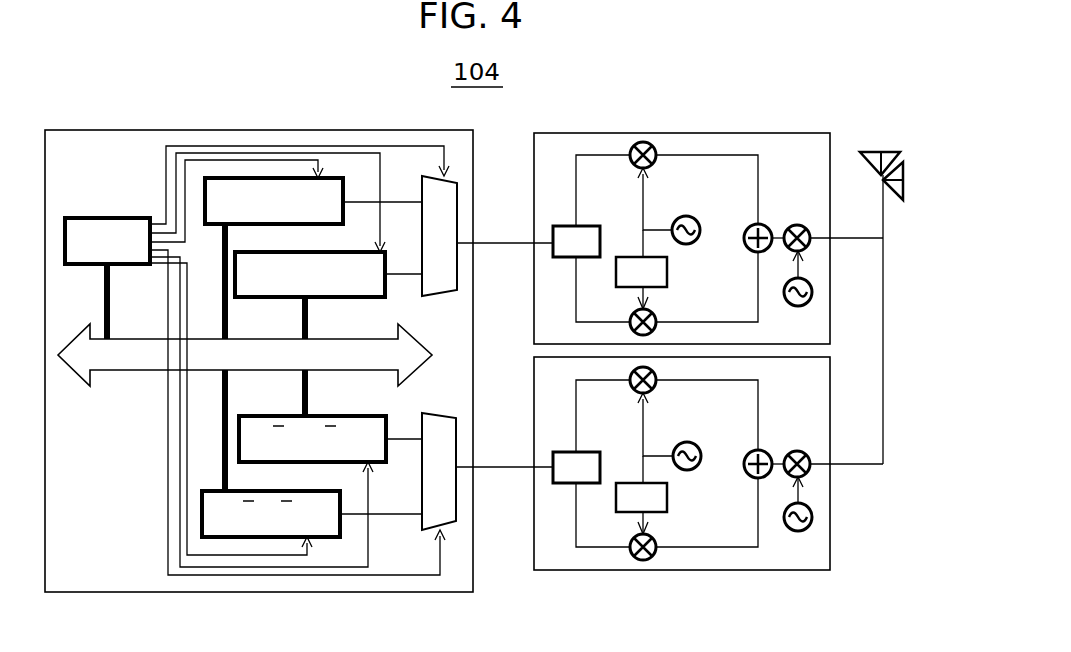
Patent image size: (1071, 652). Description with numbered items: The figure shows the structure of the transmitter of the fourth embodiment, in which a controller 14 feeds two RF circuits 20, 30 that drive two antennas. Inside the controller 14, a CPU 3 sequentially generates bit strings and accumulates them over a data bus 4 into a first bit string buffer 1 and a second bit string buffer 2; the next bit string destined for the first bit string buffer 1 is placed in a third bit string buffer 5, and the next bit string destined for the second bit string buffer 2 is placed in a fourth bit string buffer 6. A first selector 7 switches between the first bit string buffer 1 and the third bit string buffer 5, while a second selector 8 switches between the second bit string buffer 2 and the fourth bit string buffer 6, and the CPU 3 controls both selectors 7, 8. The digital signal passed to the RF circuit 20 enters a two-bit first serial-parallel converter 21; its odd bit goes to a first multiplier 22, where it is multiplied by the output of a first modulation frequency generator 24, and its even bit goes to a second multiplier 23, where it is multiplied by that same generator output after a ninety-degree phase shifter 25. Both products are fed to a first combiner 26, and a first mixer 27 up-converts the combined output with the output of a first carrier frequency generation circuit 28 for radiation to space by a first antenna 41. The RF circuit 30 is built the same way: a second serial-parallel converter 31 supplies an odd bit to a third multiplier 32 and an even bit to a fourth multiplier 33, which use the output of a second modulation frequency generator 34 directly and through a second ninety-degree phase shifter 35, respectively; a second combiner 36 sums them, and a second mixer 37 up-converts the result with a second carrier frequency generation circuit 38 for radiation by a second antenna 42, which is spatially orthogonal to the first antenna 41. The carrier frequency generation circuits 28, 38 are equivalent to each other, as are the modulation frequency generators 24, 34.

The controller 14 is at (126, 130).
The CPU 3 is at (86, 218).
The data bus 4 is at (130, 373).
The first bit string buffer 1 is at (315, 225).
The third bit string buffer 5 is at (243, 251).
The fourth bit string buffer 6 is at (276, 416).
The second bit string buffer 2 is at (284, 491).
The first selector 7 is at (431, 180).
The second selector 8 is at (427, 416).
The RF circuit 20 is at (617, 132).
The first serial-parallel converter 21 is at (566, 226).
The first multiplier 22 is at (656, 148).
The second multiplier 23 is at (656, 316).
The first modulation frequency generator 24 is at (700, 228).
The 90-degree phase shifter 25 is at (667, 272).
The first combiner 26 is at (751, 226).
The first mixer 27 is at (794, 226).
The first carrier frequency generation circuit 28 is at (812, 290).
The RF circuit 30 is at (613, 571).
The second serial-parallel converter 31 is at (566, 452).
The third multiplier 32 is at (656, 373).
The fourth multiplier 33 is at (656, 553).
The second modulation frequency generator 34 is at (701, 454).
The second 90-degree phase shifter 35 is at (667, 498).
The second combiner 36 is at (752, 452).
The second mixer 37 is at (795, 452).
The second carrier frequency generation circuit 38 is at (812, 516).
The first antenna 41 is at (868, 151).
The second antenna 42 is at (906, 178).